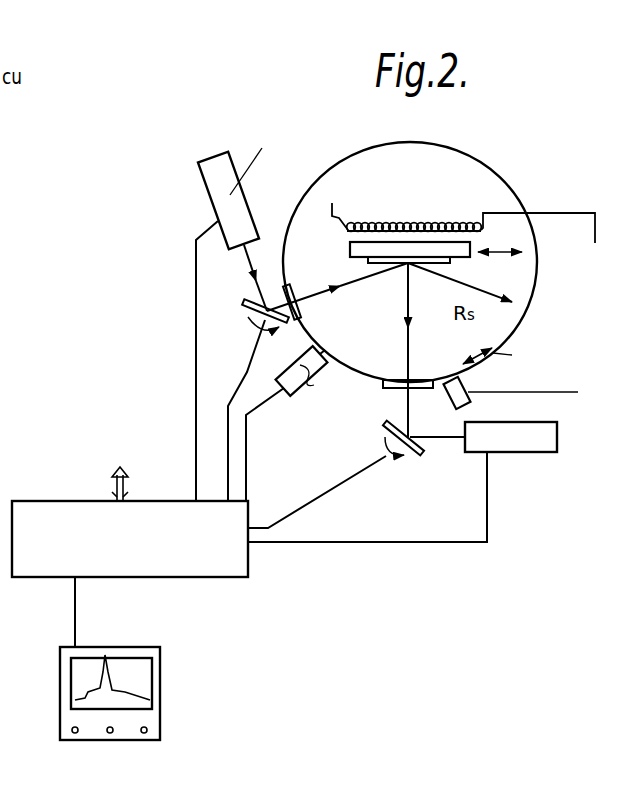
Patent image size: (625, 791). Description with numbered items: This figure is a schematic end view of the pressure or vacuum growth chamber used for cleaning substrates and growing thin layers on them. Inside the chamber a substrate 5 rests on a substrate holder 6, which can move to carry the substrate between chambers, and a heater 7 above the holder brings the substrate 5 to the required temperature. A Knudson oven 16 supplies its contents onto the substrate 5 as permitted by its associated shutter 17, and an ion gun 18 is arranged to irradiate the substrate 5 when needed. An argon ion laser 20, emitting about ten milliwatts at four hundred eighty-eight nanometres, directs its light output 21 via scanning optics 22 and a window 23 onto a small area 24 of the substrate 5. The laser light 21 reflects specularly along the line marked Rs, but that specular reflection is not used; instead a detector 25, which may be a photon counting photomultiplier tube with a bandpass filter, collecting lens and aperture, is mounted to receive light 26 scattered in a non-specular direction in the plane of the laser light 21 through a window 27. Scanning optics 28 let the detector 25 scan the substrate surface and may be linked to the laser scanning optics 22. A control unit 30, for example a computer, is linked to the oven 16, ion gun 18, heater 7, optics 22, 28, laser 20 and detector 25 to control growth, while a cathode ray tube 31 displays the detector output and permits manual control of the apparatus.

The substrate 5 is at (452, 262).
The substrate holder 6 is at (350, 249).
The heater 7 is at (332, 203).
The Knudson oven 16 is at (447, 406).
The shutter 17 is at (451, 350).
The ion gun 18 is at (289, 400).
The argon ion laser 20 is at (203, 180).
The laser light output 21 is at (367, 278).
The scanning optics 22 is at (240, 305).
The window 23 is at (300, 316).
The small area on the substrate 24 is at (414, 274).
The detector 25 is at (535, 452).
The scattered light 26 is at (406, 351).
The window 27 is at (385, 391).
The scanning optics 28 is at (421, 456).
The control unit 30 is at (62, 500).
The cathode ray tube 31 is at (60, 672).